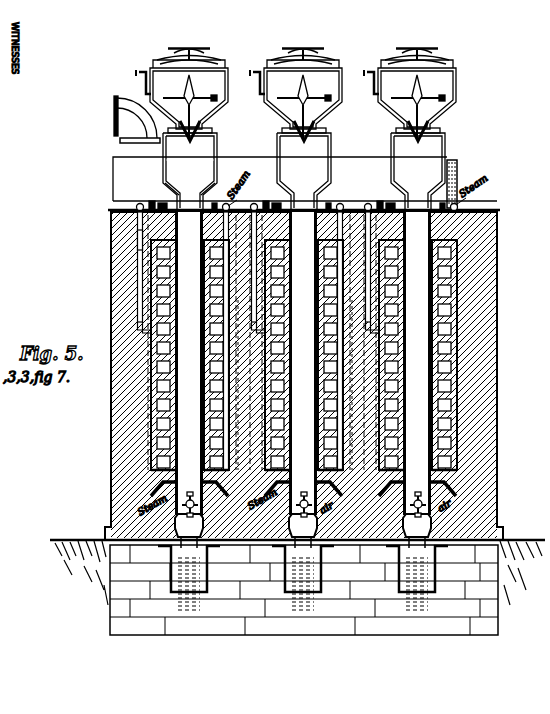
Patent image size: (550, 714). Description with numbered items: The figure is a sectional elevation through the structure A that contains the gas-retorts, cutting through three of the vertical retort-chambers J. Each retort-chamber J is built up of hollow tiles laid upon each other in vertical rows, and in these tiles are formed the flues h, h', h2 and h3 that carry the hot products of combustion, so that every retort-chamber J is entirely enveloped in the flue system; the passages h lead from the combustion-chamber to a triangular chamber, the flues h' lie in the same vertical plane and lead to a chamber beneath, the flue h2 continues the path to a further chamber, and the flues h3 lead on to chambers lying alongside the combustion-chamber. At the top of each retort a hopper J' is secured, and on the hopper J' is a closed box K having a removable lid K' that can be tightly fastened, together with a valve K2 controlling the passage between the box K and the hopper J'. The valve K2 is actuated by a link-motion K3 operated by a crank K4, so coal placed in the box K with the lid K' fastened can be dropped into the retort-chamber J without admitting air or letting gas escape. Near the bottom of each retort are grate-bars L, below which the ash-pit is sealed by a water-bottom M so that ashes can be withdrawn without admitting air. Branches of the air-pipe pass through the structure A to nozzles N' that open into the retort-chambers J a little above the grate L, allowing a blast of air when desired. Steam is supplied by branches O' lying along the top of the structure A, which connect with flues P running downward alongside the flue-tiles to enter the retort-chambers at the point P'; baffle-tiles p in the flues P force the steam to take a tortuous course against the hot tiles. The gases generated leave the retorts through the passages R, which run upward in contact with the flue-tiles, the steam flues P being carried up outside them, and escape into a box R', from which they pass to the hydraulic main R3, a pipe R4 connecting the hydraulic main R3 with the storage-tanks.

The structure A is at (115, 210).
The removable lid K' is at (307, 54).
The closed box K is at (297, 100).
The valve K2 is at (293, 171).
The link-motion K3 is at (186, 86).
The crank K4 is at (241, 82).
The hopper J' is at (291, 177).
The hydraulic main R3 is at (280, 179).
The pipe R4 is at (137, 119).
The box R' is at (300, 184).
The branches O' is at (310, 200).
The passages R is at (280, 341).
The baffle-tiles p is at (137, 250).
The flues P is at (302, 341).
The retort-chambers J is at (284, 355).
The passages h is at (289, 300).
The flues h' is at (291, 388).
The flue h2 is at (177, 437).
The flues h3 is at (299, 292).
The point of entry P' is at (286, 465).
The nozzles N' is at (291, 498).
The grate-bars L is at (297, 378).
The water-bottom M is at (290, 573).